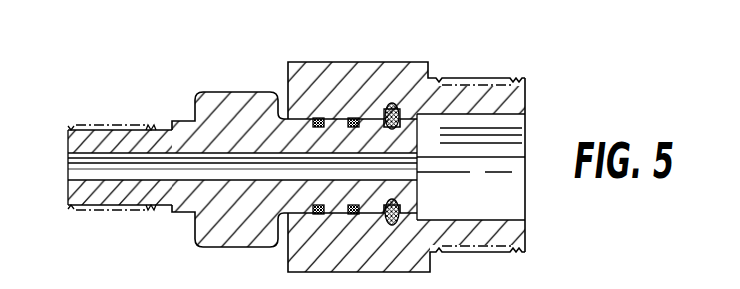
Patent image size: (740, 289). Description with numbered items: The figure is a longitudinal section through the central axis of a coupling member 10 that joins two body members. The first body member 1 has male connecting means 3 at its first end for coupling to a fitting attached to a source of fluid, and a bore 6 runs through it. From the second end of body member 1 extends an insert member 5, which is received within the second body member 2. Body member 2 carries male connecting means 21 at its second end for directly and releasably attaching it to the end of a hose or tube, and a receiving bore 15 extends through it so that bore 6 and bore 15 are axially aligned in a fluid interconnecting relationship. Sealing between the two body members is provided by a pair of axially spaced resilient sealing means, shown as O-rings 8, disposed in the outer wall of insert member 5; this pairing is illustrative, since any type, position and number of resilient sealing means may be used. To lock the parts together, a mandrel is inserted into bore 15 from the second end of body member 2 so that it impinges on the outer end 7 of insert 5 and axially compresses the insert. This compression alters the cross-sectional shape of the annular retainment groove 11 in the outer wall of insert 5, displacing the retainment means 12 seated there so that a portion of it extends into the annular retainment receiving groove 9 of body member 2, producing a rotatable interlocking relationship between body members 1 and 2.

The body member 1 is at (231, 92).
The body member 2 is at (355, 62).
The male connecting means 3 is at (102, 142).
The insert member 5 is at (335, 207).
The bore 6 is at (150, 158).
The outer end 7 is at (417, 204).
The O-rings 8 is at (354, 117).
The annular retainment receiving groove 9 is at (399, 110).
The coupling member 10 is at (305, 46).
The annular retainment groove 11 is at (475, 138).
The retainment means 12 is at (391, 104).
The receiving bore 15 is at (510, 148).
The male connecting means 21 is at (528, 87).